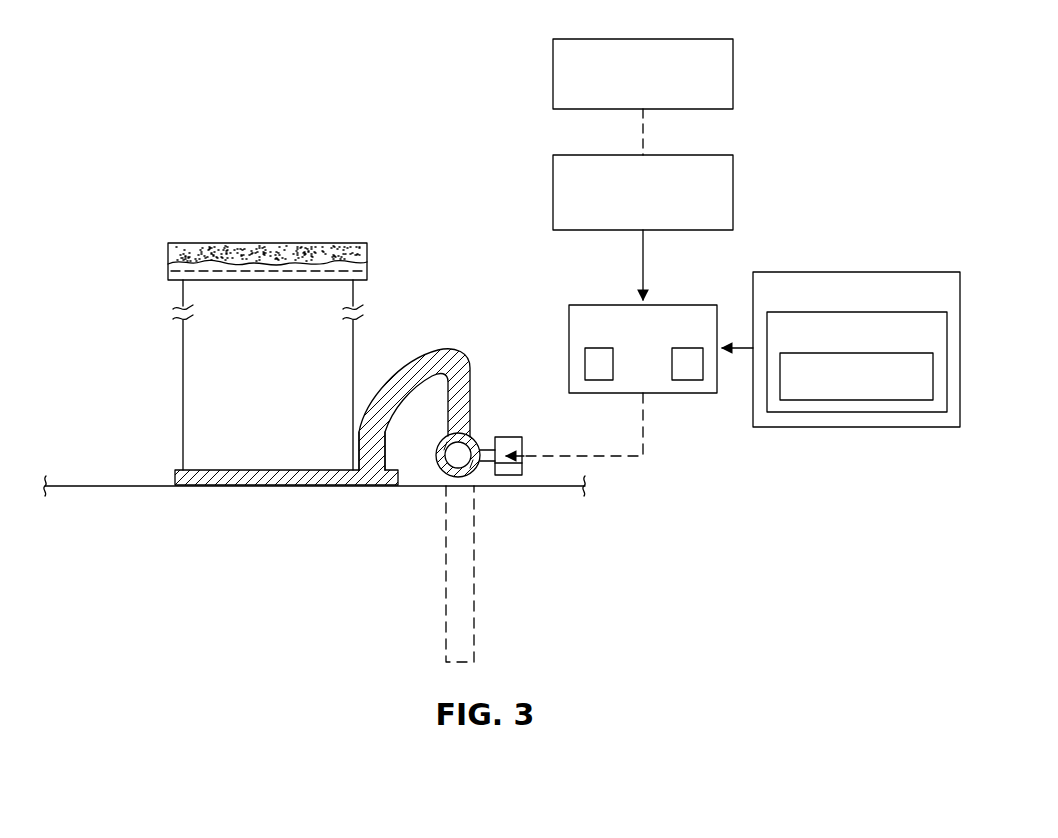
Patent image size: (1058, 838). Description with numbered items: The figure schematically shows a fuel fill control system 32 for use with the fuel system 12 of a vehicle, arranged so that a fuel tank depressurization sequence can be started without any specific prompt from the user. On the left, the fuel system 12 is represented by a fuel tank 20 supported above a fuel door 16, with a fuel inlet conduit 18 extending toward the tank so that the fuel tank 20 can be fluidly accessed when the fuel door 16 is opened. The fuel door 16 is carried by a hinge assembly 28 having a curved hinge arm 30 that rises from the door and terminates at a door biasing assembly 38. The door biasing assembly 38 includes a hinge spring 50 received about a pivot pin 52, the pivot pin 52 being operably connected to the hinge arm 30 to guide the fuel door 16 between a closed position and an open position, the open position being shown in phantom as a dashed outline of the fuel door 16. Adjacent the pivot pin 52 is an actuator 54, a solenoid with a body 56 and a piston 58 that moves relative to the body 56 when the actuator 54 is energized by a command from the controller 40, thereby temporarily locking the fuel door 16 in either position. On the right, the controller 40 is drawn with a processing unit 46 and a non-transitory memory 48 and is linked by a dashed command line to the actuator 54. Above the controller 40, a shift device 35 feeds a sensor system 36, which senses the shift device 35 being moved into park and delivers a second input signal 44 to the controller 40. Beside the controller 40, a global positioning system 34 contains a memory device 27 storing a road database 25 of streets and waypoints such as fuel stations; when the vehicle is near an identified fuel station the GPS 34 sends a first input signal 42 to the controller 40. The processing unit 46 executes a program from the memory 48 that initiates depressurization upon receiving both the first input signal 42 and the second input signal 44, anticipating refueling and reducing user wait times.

The fuel system 12 is at (260, 333).
The fuel door 16 is at (252, 485).
The fuel inlet conduit 18 is at (183, 390).
The fuel tank 20 is at (168, 262).
The road database 25 is at (913, 400).
The memory device 27 is at (797, 412).
The hinge assembly 28 is at (381, 391).
The hinge arm 30 is at (362, 432).
The fuel fill control system 32 is at (670, 482).
The global positioning system (GPS) 34 is at (856, 359).
The shift device 35 is at (608, 39).
The sensor system 36 is at (610, 155).
The door biasing assembly 38 is at (435, 463).
The controller 40 is at (618, 361).
The first input signal 42 is at (745, 348).
The second input signal 44 is at (643, 268).
The processing unit 46 is at (585, 365).
The memory 48 is at (688, 380).
The hinge spring 50 is at (438, 458).
The pivot pin 52 is at (452, 478).
The actuator 54 is at (539, 474).
The body 56 is at (515, 477).
The piston 58 is at (484, 470).